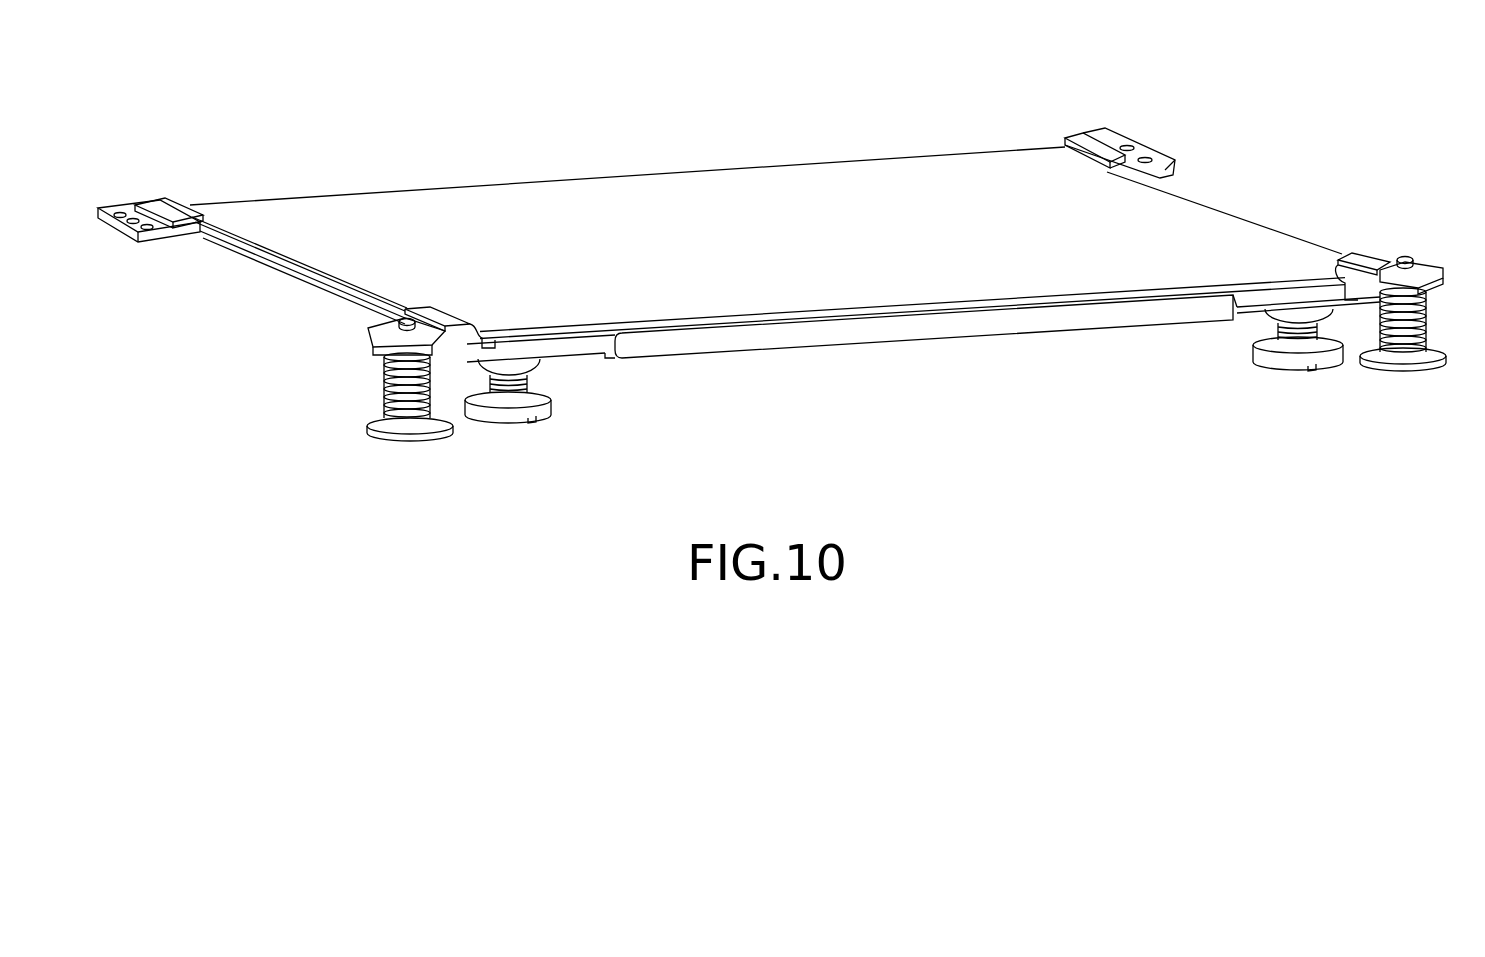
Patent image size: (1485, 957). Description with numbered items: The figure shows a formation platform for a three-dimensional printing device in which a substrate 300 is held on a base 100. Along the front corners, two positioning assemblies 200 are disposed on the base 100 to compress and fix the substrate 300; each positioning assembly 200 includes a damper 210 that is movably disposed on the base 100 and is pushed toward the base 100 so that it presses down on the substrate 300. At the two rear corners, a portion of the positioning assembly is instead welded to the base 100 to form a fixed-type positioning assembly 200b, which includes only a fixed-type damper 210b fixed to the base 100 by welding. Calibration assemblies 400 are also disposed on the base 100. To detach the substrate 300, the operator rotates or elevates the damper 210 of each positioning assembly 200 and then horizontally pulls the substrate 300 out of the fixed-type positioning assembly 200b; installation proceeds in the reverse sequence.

The base 100 is at (935, 350).
The positioning assembly 200 is at (415, 455).
The fixed-type positioning assembly 200b is at (150, 255).
The damper 210 is at (456, 328).
The fixed-type damper 210b is at (168, 200).
The substrate 300 is at (677, 185).
The calibration assembly 400 is at (515, 432).